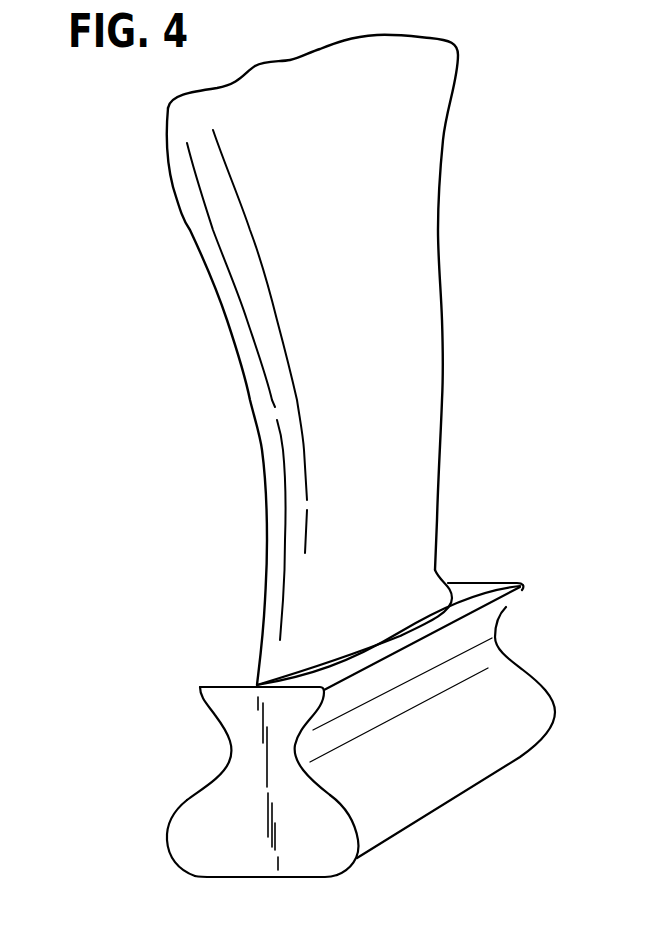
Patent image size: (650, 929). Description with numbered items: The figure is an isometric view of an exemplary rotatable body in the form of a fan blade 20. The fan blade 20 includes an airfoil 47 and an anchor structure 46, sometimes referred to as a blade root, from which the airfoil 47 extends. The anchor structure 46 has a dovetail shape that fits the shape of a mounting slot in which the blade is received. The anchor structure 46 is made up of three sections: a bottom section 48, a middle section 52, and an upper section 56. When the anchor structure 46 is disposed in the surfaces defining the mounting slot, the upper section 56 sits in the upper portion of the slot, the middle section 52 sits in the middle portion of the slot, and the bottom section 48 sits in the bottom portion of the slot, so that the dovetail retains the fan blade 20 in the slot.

The fan blade 20 is at (98, 181).
The airfoil 47 is at (237, 483).
The anchor structure 46 is at (164, 683).
The upper section 56 is at (231, 750).
The middle section 52 is at (167, 838).
The bottom section 48 is at (296, 878).